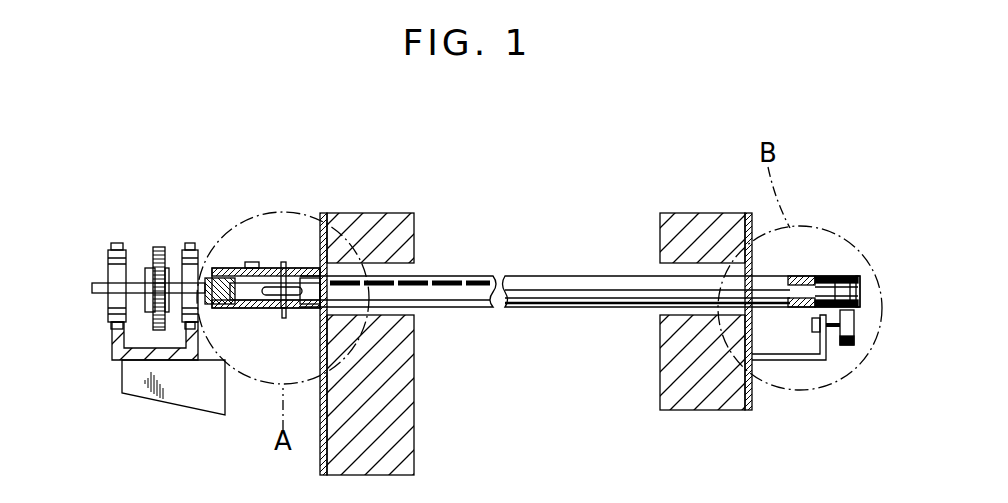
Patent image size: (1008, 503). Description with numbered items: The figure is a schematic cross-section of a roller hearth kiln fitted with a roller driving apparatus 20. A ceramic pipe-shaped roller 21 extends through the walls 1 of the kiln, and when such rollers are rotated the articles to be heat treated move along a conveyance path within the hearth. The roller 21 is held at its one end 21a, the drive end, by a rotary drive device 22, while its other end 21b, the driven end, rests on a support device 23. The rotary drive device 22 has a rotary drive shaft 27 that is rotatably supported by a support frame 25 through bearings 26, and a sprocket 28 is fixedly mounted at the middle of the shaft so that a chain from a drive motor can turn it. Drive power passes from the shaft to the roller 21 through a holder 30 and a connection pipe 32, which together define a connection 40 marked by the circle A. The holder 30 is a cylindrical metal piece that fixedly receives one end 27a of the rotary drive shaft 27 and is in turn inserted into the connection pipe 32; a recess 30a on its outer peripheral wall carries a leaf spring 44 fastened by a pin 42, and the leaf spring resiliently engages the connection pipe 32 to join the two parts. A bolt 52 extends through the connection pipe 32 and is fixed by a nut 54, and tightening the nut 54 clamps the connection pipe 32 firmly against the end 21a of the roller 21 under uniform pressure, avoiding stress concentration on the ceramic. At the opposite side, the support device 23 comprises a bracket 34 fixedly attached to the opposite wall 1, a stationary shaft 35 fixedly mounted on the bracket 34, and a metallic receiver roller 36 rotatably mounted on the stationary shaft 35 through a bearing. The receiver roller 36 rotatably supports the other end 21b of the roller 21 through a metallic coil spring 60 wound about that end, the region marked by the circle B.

The wall 1 is at (375, 240).
The valve operating apparatus 20 is at (642, 168).
The roller 21 is at (432, 276).
The one end 21a is at (305, 308).
The other end 21b is at (856, 290).
The rotary drive device 22 is at (145, 293).
The support device 23 is at (824, 282).
The support frame 25 is at (112, 350).
The bearings 26 is at (108, 306).
The rotary drive shaft 27 is at (140, 283).
The one end of the rotary drive shaft 27a is at (200, 372).
The sprocket 28 is at (158, 246).
The holder 30 is at (205, 275).
The recess 30a is at (210, 300).
The connection pipe 32 is at (267, 283).
The bracket 34 is at (793, 362).
The stationary shaft 35 is at (828, 330).
The receiver roller 36 is at (854, 340).
The connection 40 is at (263, 302).
The pin 42 is at (245, 305).
The leaf spring 44 is at (225, 298).
The bolt 52 is at (285, 272).
The nut 54 is at (296, 318).
The coil spring 60 is at (830, 276).